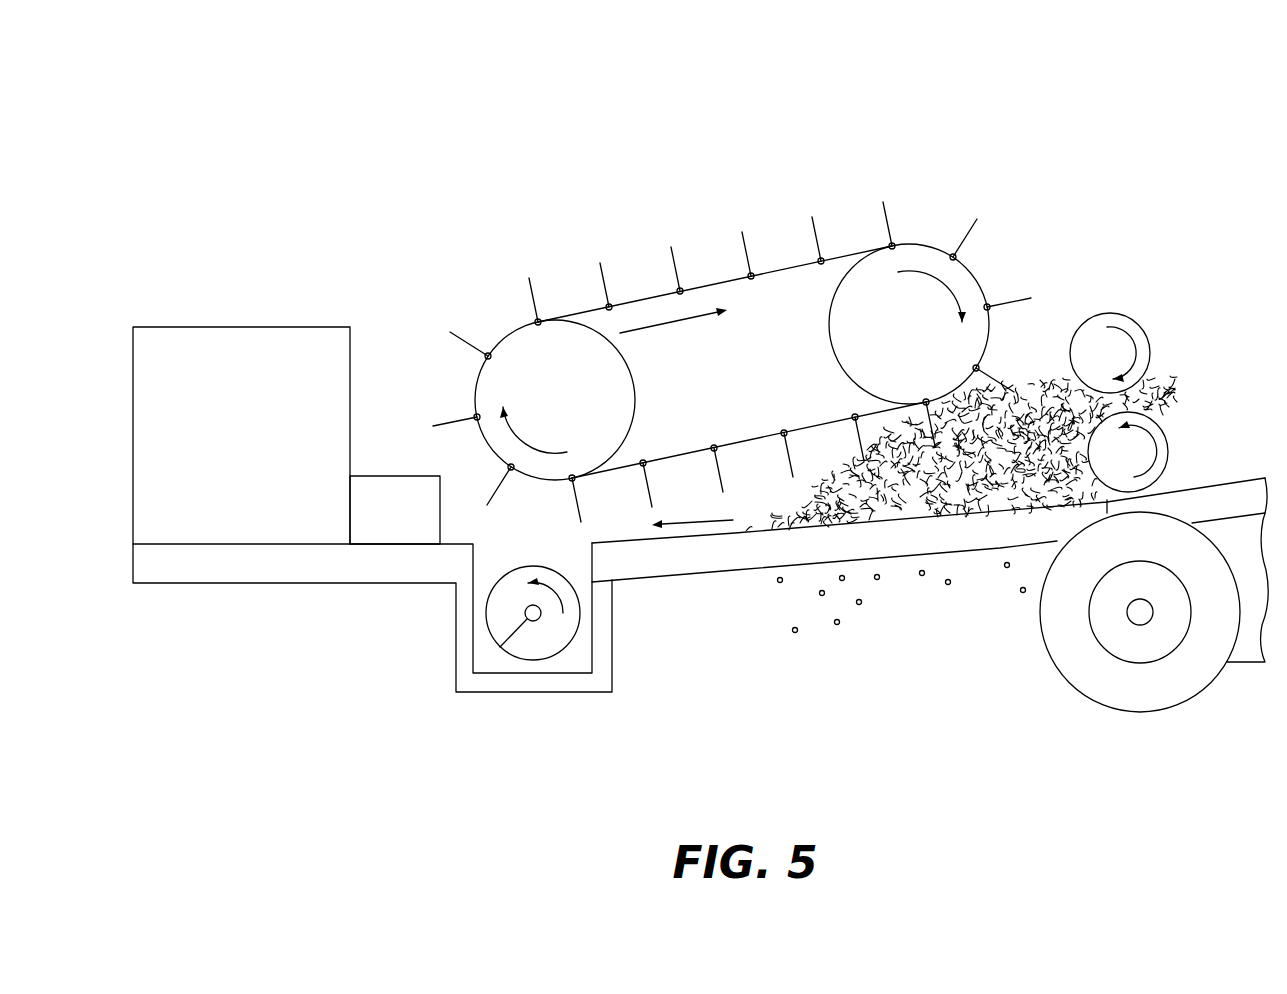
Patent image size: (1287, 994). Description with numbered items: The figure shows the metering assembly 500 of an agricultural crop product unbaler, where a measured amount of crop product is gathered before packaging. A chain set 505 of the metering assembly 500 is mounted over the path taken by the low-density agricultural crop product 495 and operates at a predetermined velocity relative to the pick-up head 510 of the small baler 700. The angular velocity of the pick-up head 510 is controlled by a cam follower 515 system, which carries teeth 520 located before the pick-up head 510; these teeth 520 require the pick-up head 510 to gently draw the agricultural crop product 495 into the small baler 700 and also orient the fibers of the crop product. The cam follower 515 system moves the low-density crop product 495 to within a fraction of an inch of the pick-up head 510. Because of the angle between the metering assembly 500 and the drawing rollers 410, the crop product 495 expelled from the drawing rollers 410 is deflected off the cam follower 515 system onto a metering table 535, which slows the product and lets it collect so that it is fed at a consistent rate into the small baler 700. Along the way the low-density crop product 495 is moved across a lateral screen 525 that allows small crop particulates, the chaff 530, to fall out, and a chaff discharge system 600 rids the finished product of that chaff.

The metering assembly 500 is at (433, 107).
The chain set 505 is at (713, 286).
The cam follower system 515 is at (818, 259).
The teeth 520 is at (975, 230).
The small baler 700 is at (239, 277).
The pick-up head 510 is at (393, 430).
The chaff discharge system 600 is at (415, 633).
The metering table 535 is at (735, 533).
The lateral screen 525 is at (890, 520).
The drawing rollers 410 is at (1164, 430).
The low-density agricultural crop product 495 is at (965, 500).
The small crop particulates (chaff) 530 is at (836, 625).